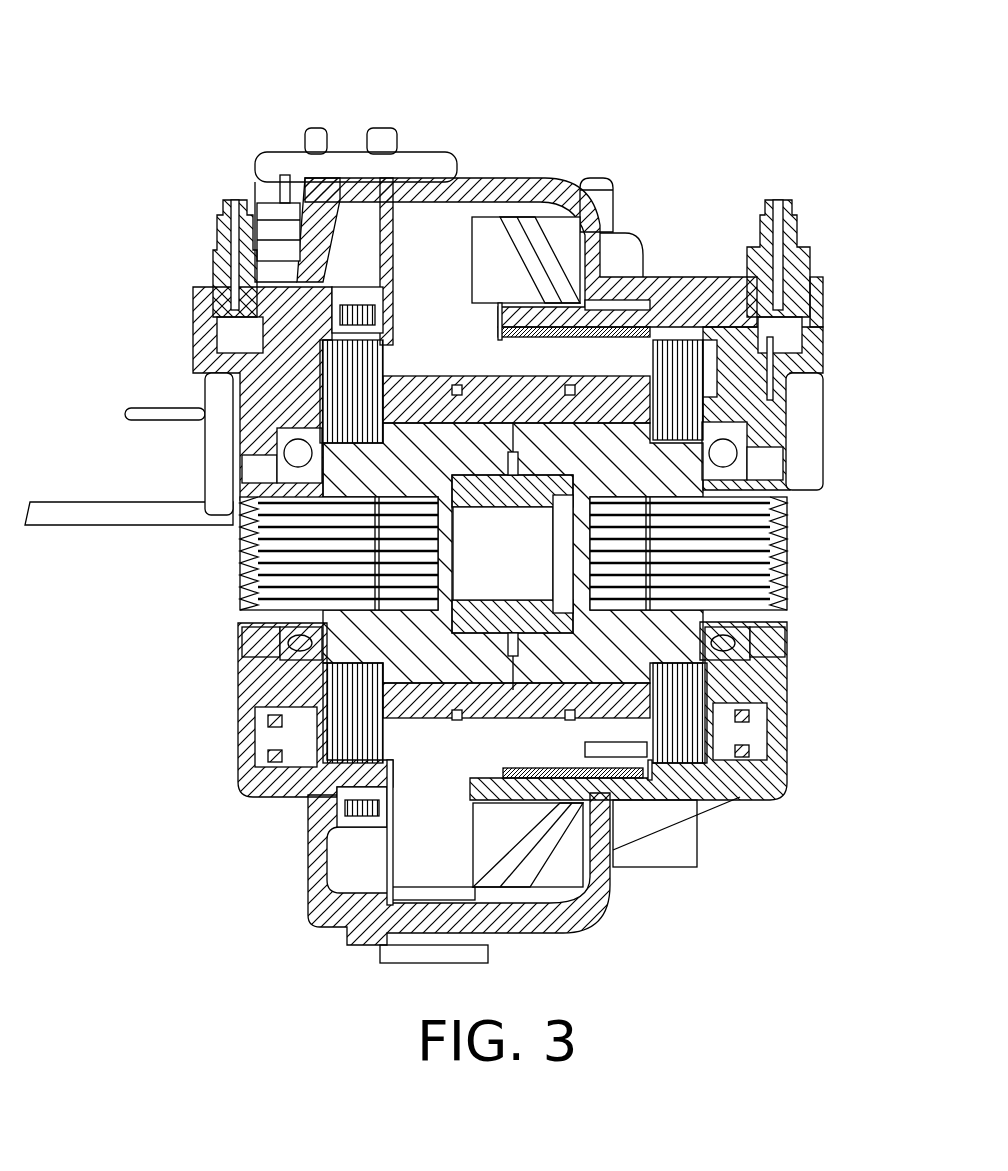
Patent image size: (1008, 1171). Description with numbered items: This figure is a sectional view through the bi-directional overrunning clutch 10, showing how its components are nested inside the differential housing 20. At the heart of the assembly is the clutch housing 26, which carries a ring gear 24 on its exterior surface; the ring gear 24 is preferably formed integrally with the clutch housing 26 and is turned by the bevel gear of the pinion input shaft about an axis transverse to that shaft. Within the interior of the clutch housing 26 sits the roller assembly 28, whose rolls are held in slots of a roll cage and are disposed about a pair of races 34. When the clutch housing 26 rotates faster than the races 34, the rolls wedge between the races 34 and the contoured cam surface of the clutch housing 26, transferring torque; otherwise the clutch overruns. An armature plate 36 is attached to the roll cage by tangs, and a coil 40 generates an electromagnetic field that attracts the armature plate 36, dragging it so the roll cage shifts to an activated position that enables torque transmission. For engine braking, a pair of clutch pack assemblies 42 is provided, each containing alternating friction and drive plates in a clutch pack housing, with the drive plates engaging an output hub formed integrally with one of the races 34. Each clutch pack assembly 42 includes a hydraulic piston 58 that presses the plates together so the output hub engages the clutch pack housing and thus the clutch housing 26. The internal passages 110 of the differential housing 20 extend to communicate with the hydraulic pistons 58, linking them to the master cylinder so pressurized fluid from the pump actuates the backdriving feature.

The bi-directional overrunning clutch 10 is at (642, 105).
The differential housing 20 is at (762, 795).
The ring gear 24 is at (490, 240).
The clutch housing 26 is at (413, 350).
The roller assembly 28 is at (625, 383).
The races 34 is at (237, 613).
The armature plate 36 is at (362, 196).
The coil 40 is at (240, 330).
The clutch pack assemblies 42 is at (310, 797).
The hydraulic piston 58 is at (245, 372).
The internal passages 110 is at (222, 333).